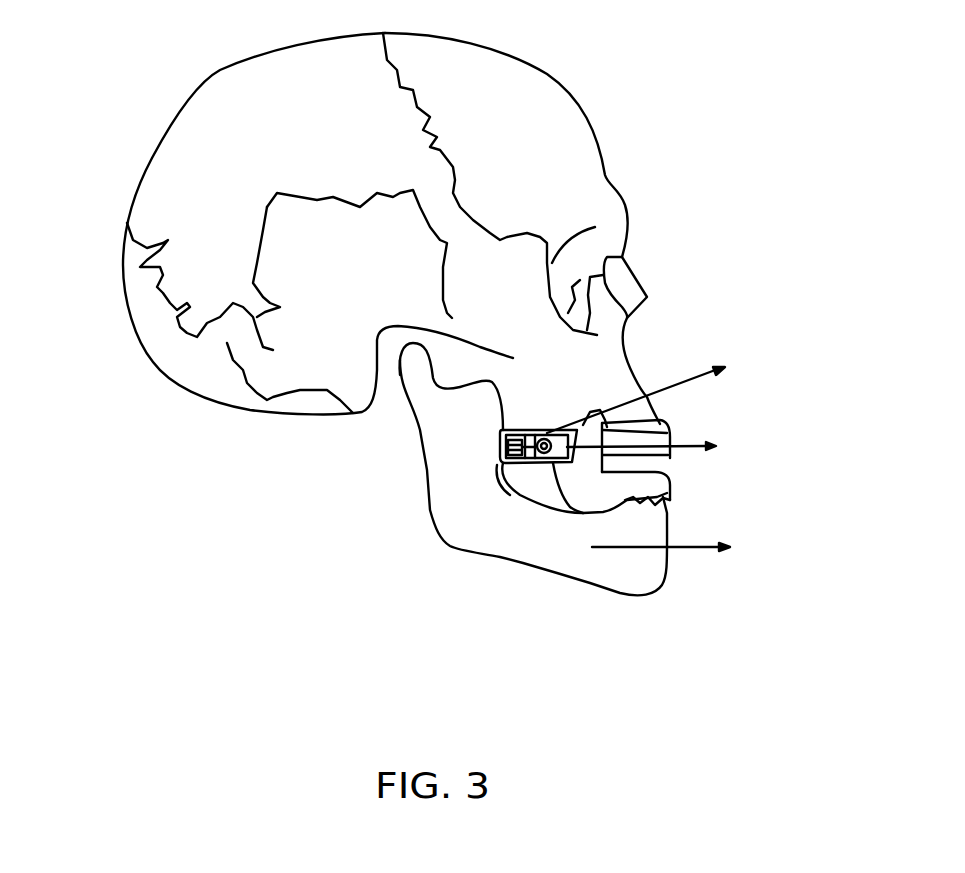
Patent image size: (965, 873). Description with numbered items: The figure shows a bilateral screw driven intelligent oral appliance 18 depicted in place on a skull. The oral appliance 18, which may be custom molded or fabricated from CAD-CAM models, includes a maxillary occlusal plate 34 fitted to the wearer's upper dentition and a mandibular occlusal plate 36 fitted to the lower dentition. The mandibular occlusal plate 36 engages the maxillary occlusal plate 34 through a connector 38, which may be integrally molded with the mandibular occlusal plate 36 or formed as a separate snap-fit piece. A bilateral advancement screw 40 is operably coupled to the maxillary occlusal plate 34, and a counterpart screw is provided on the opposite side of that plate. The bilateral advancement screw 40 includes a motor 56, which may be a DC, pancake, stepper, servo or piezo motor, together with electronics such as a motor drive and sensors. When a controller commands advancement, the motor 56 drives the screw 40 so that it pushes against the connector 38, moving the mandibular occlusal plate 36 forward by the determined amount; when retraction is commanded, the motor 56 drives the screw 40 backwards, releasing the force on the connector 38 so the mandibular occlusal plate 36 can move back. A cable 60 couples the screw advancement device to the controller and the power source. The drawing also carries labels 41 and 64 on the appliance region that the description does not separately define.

The intelligent oral appliance 18 is at (833, 371).
The maxillary occlusal plate 34 is at (655, 437).
The mandibular occlusal plate 36 is at (655, 488).
The connector 38 is at (590, 433).
The bilateral advancement screw 40 is at (518, 430).
The lead 41 is at (550, 463).
The motor 56 is at (656, 389).
The cable 60 is at (681, 552).
The zygomatic region 64 is at (540, 430).